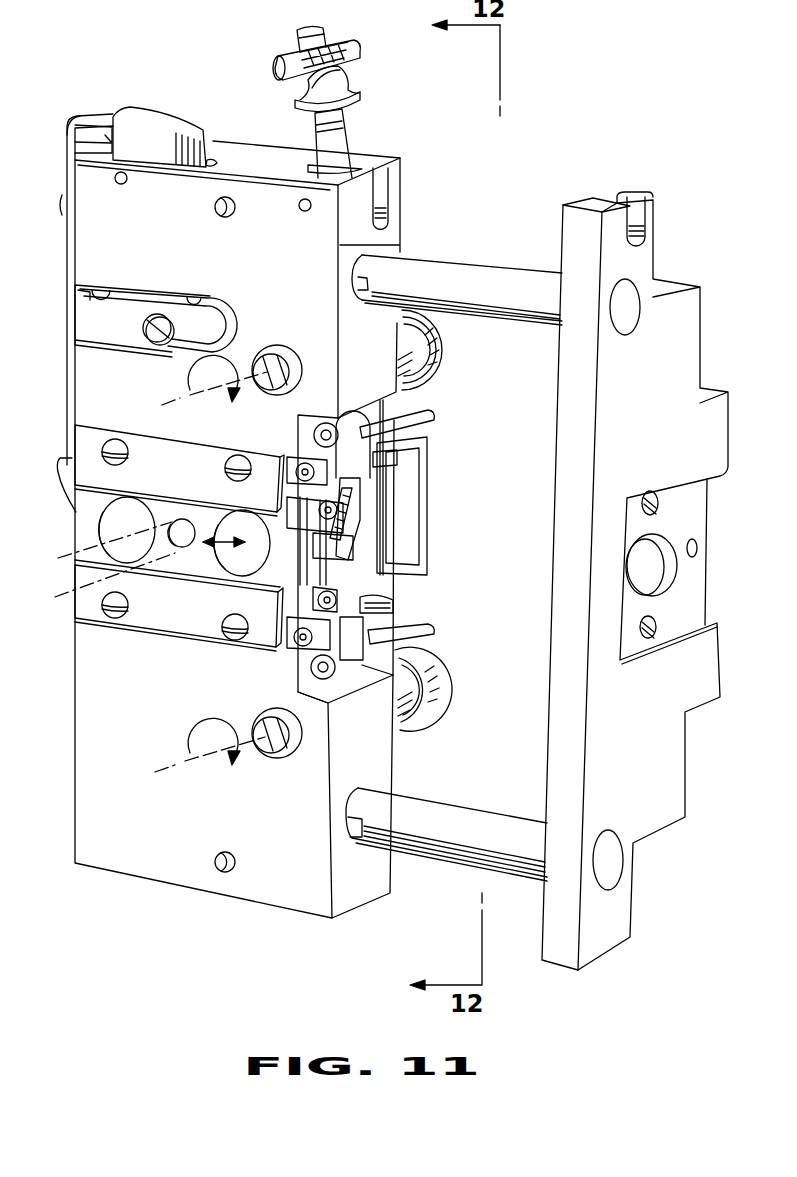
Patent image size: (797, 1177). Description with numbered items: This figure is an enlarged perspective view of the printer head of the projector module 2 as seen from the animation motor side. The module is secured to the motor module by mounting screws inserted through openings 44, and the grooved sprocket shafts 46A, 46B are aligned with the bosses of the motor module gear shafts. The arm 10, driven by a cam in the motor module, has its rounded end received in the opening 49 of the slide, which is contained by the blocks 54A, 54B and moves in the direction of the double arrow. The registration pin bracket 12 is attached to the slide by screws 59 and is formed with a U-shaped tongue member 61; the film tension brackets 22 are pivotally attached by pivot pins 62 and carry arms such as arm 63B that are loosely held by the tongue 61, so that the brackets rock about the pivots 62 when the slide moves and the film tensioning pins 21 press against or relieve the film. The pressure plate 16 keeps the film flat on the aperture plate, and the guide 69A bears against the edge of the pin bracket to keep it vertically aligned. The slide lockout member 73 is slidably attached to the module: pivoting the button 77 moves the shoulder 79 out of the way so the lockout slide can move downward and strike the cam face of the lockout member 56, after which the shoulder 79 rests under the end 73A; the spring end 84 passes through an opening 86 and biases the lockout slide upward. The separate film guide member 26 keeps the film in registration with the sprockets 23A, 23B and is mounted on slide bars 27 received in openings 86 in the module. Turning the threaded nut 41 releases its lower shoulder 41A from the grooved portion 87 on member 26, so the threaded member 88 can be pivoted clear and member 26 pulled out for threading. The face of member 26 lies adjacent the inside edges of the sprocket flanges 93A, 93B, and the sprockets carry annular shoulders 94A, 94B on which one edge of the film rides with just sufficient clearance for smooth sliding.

The projector module 2 is at (382, 485).
The arm 10 is at (92, 540).
The registration pin bracket 12 is at (348, 521).
The pressure plate 16 is at (410, 480).
The film tensioning pins 21 is at (430, 412).
The film tension bracket 22 is at (348, 448).
The sprocket 23A is at (410, 693).
The sprocket 23B is at (412, 342).
The film guide member 26 is at (703, 357).
The slide bars 27 is at (472, 268).
The threaded nut 41 is at (363, 49).
The lower shoulder 41A is at (360, 103).
The openings 44 is at (215, 208).
The sprocket shaft 46A is at (285, 752).
The sprocket shaft 46B is at (281, 352).
The opening 49 is at (192, 550).
The block 54A is at (190, 480).
The block 54B is at (190, 622).
The lockout member 56 is at (58, 472).
The screws 59 is at (310, 506).
The tongue member 61 is at (388, 528).
The pivot pins 62 is at (298, 463).
The arm 63B is at (395, 500).
The guide 69A is at (395, 555).
The slide lockout member 73 is at (70, 245).
The end 73A is at (80, 120).
The button 77 is at (155, 136).
The shoulder 79 is at (105, 143).
The spring end 84 is at (113, 296).
The opening 86 is at (75, 298).
The grooved portion 87 is at (640, 215).
The threaded member 88 is at (345, 140).
The flange 93A is at (440, 655).
The flange 93B is at (440, 388).
The annular shoulder 94A is at (428, 672).
The annular shoulder 94B is at (432, 362).